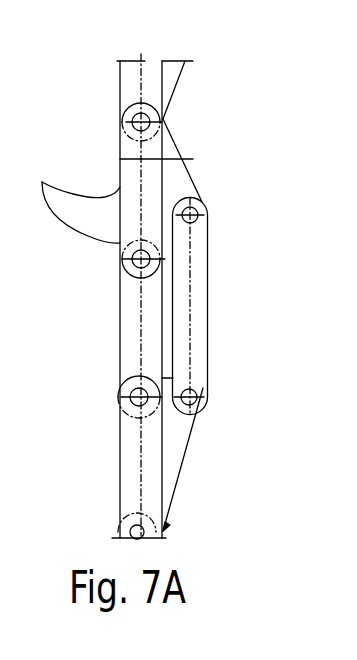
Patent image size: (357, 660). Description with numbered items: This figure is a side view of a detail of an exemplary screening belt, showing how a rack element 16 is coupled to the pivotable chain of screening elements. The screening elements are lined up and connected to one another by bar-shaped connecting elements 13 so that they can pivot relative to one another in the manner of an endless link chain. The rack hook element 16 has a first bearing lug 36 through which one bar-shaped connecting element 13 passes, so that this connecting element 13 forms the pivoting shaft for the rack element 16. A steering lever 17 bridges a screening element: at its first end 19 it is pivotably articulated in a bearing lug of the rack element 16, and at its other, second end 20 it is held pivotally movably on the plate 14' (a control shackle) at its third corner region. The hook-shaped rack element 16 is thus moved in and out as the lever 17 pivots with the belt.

The first bearing lug 36 is at (121, 106).
The bar-shaped connecting element 13 is at (164, 118).
The rack element 16 is at (57, 193).
The steering lever 17 is at (200, 337).
The first end of the steering lever 19 is at (202, 199).
The second end of the steering lever 20 is at (200, 403).
The plate 14' is at (193, 459).